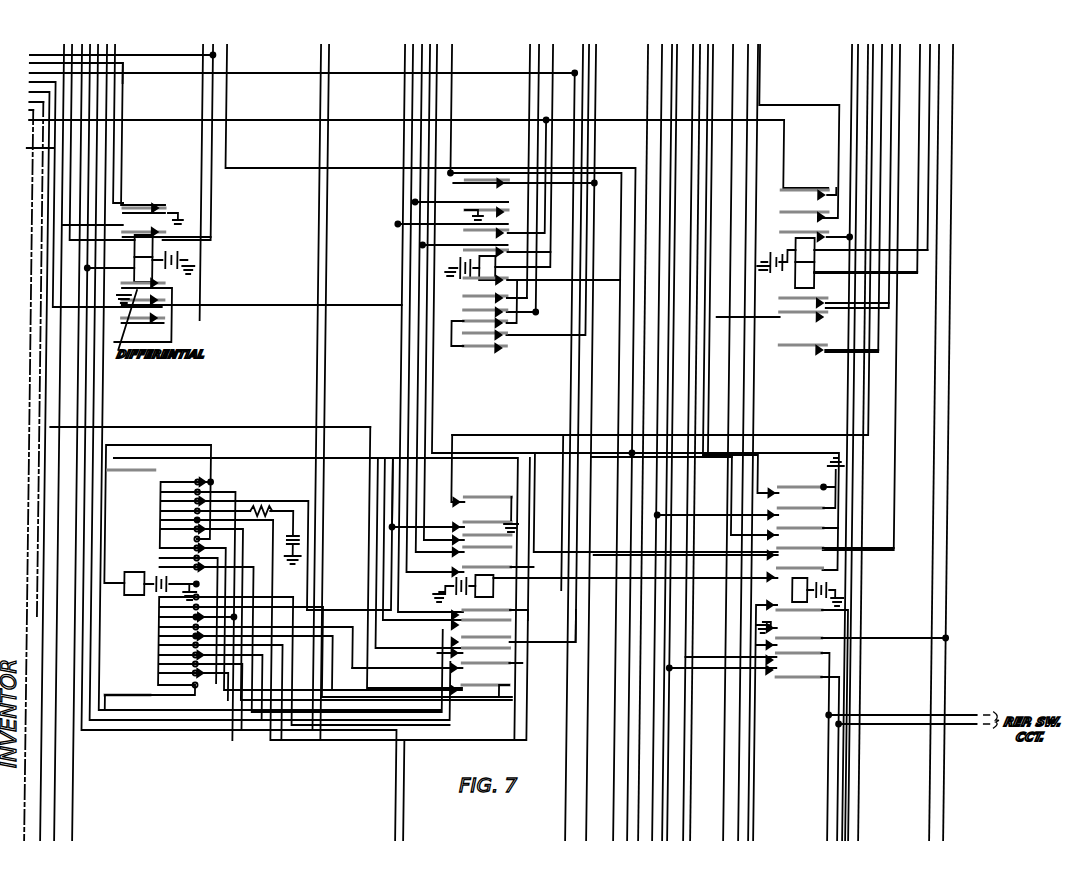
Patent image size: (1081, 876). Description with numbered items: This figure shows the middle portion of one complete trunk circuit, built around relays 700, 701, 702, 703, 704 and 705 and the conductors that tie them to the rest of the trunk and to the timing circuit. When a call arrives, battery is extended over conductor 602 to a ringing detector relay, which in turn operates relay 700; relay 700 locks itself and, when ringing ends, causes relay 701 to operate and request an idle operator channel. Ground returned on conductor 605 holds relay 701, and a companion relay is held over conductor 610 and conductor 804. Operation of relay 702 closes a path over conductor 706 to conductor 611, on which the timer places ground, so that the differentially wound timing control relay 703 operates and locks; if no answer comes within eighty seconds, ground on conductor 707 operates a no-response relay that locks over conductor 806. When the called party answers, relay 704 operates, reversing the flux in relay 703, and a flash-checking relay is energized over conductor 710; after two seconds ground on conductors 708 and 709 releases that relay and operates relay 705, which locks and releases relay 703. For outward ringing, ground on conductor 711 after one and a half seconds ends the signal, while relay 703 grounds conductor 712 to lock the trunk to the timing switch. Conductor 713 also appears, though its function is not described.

The relay 700 is at (806, 603).
The relay 701 is at (803, 238).
The relay 702 is at (484, 256).
The timing control relay 703 is at (142, 235).
The relay 704 is at (500, 582).
The relay 705 is at (148, 566).
The conductor 706 is at (432, 73).
The conductor 707 is at (292, 74).
The conductor 708 is at (123, 83).
The conductor 709 is at (163, 412).
The conductor 710 is at (575, 640).
The conductor 711 is at (42, 782).
The conductor 712 is at (126, 108).
The conductor 713 is at (380, 120).
The conductor 602 is at (58, 806).
The conductor 605 is at (939, 137).
The conductor 610 is at (868, 77).
The conductor 611 is at (168, 65).
The conductor 804 is at (648, 135).
The conductor 806 is at (594, 98).